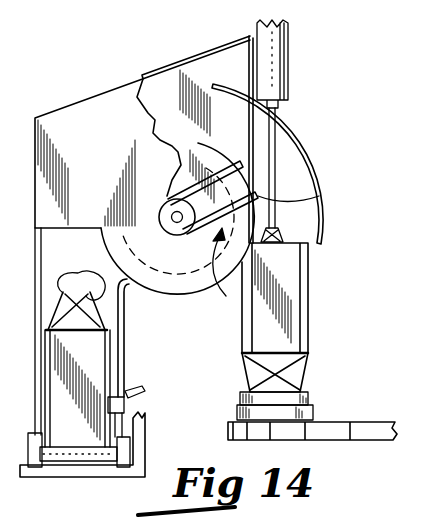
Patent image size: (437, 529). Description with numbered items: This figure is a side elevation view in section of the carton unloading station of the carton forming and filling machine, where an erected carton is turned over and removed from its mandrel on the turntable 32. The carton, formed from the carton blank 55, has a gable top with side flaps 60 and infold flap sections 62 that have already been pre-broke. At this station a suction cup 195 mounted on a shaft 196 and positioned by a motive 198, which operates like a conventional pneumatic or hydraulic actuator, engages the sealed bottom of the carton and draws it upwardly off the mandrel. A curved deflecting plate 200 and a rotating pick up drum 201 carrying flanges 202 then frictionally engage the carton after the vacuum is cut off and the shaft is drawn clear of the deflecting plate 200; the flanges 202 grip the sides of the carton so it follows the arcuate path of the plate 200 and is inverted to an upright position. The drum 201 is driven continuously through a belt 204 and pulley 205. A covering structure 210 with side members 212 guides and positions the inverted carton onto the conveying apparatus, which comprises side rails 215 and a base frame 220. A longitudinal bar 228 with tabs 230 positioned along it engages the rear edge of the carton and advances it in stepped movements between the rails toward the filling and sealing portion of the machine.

The covering structure 210 is at (93, 98).
The motive 198 is at (272, 78).
The shaft 196 is at (275, 119).
The deflecting plate 200 is at (311, 178).
The belt 204 is at (307, 197).
The suction cup 195 is at (283, 238).
The pulley 205 is at (172, 200).
The carton blank 55 is at (309, 311).
The side flaps 60 is at (79, 274).
The infold flap sections 62 is at (80, 304).
The pick up drum 201 is at (172, 295).
The flanges 202 is at (211, 271).
The side members 212 is at (125, 326).
The tabs or flanges 230 is at (121, 389).
The longitudinal bar 228 is at (132, 408).
The side rails 215 is at (26, 466).
The base frame 220 is at (113, 480).
The turntable 32 is at (366, 404).